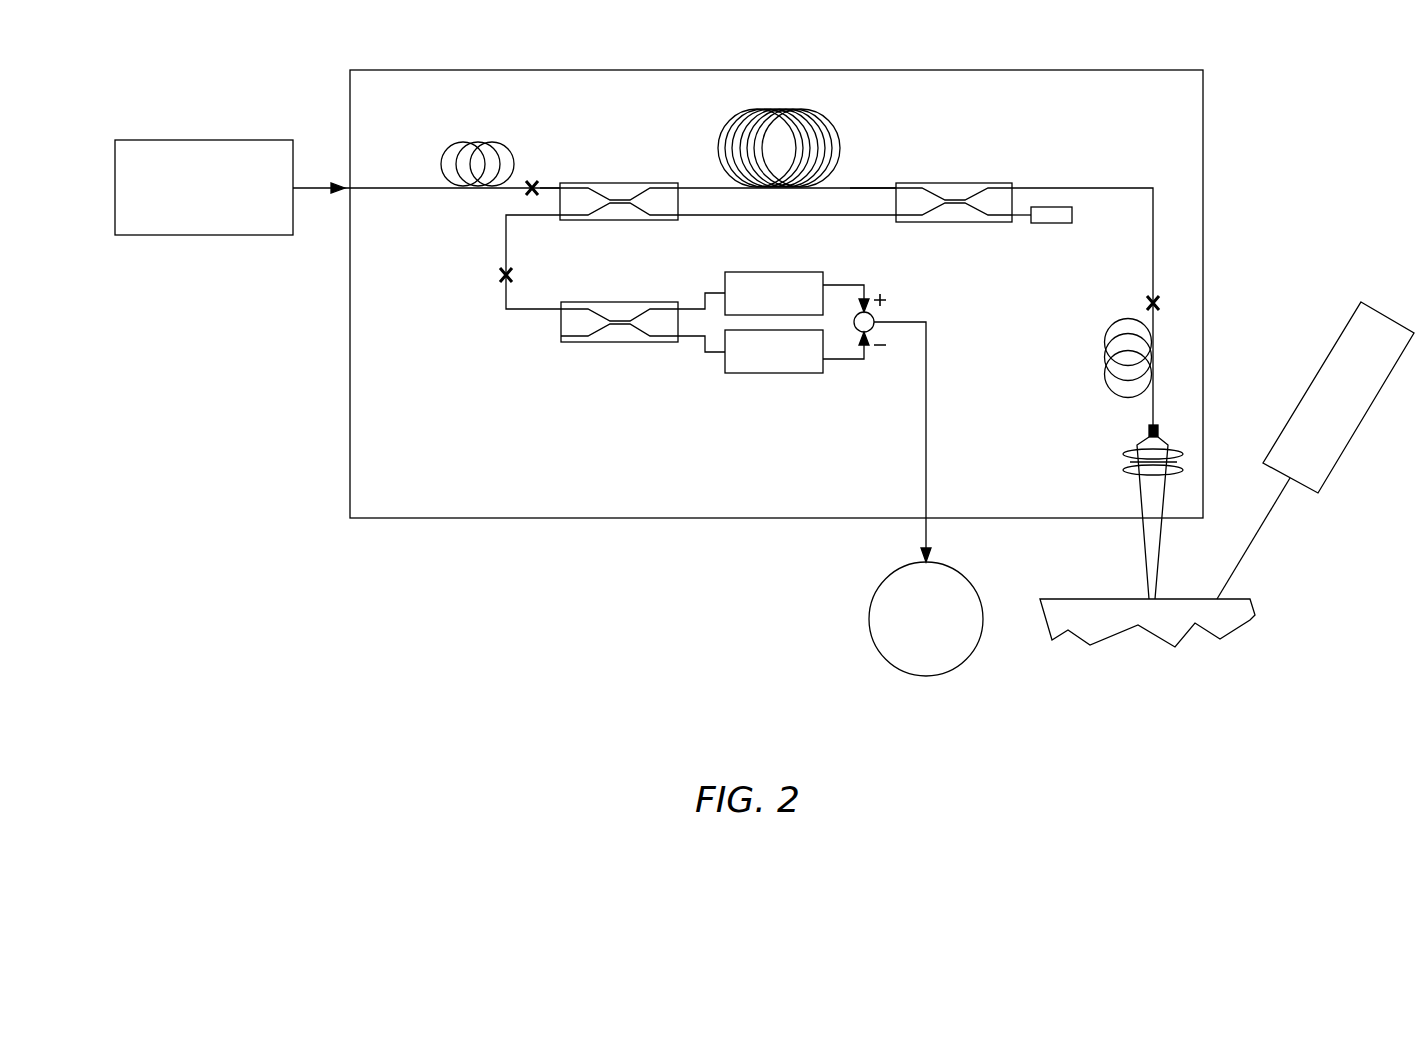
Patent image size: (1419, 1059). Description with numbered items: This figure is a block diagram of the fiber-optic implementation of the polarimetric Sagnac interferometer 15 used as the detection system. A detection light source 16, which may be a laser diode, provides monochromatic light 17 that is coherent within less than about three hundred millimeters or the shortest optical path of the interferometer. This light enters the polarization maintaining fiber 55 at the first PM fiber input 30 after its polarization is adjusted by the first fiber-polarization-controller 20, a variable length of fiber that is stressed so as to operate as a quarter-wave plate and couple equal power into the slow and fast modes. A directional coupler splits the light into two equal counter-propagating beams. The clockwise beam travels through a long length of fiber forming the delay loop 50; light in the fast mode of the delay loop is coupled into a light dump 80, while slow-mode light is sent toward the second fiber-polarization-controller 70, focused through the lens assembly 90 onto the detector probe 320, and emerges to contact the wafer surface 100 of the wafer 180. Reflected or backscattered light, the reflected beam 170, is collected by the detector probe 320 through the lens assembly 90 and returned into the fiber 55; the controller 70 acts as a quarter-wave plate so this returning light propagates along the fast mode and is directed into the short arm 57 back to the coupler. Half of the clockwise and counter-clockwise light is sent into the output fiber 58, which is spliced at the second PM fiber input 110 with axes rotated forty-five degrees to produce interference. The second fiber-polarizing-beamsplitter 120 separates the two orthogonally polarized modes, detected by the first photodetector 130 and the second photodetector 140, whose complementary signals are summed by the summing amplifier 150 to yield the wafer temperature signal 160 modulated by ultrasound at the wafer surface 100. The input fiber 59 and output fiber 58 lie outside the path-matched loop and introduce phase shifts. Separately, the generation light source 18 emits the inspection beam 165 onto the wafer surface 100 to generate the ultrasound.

The polarimetric Sagnac interferometer 15 is at (1252, 126).
The detection light source 16 is at (173, 238).
The monochromatic light 17 is at (308, 186).
The generation light source 18 is at (1338, 467).
The first fiber-polarization-controller 20 is at (466, 146).
The first polarization maintaining fiber input 30 is at (535, 181).
The delay loop 50 is at (802, 108).
The polarization maintaining fiber 55 is at (855, 185).
The short arm 57 is at (705, 218).
The output fiber 58 is at (506, 240).
The input fiber 59 is at (556, 186).
The second fiber-polarization-controller 70 is at (1112, 372).
The light dump 80 is at (1045, 224).
The lens assembly 90 is at (1128, 457).
The wafer surface 100 is at (1107, 598).
The second PM fiber input 110 is at (512, 275).
The second fiber-polarizing-beamsplitter 120 is at (578, 343).
The first photodetector 130 is at (732, 275).
The second photodetector 140 is at (738, 374).
The summing amplifier 150 is at (876, 322).
The wafer temperature signal 160 is at (879, 590).
The inspection beam 165 is at (1250, 546).
The reflected beam 170 is at (1142, 543).
The wafer 180 is at (1143, 614).
The detector probe 320 is at (1147, 431).